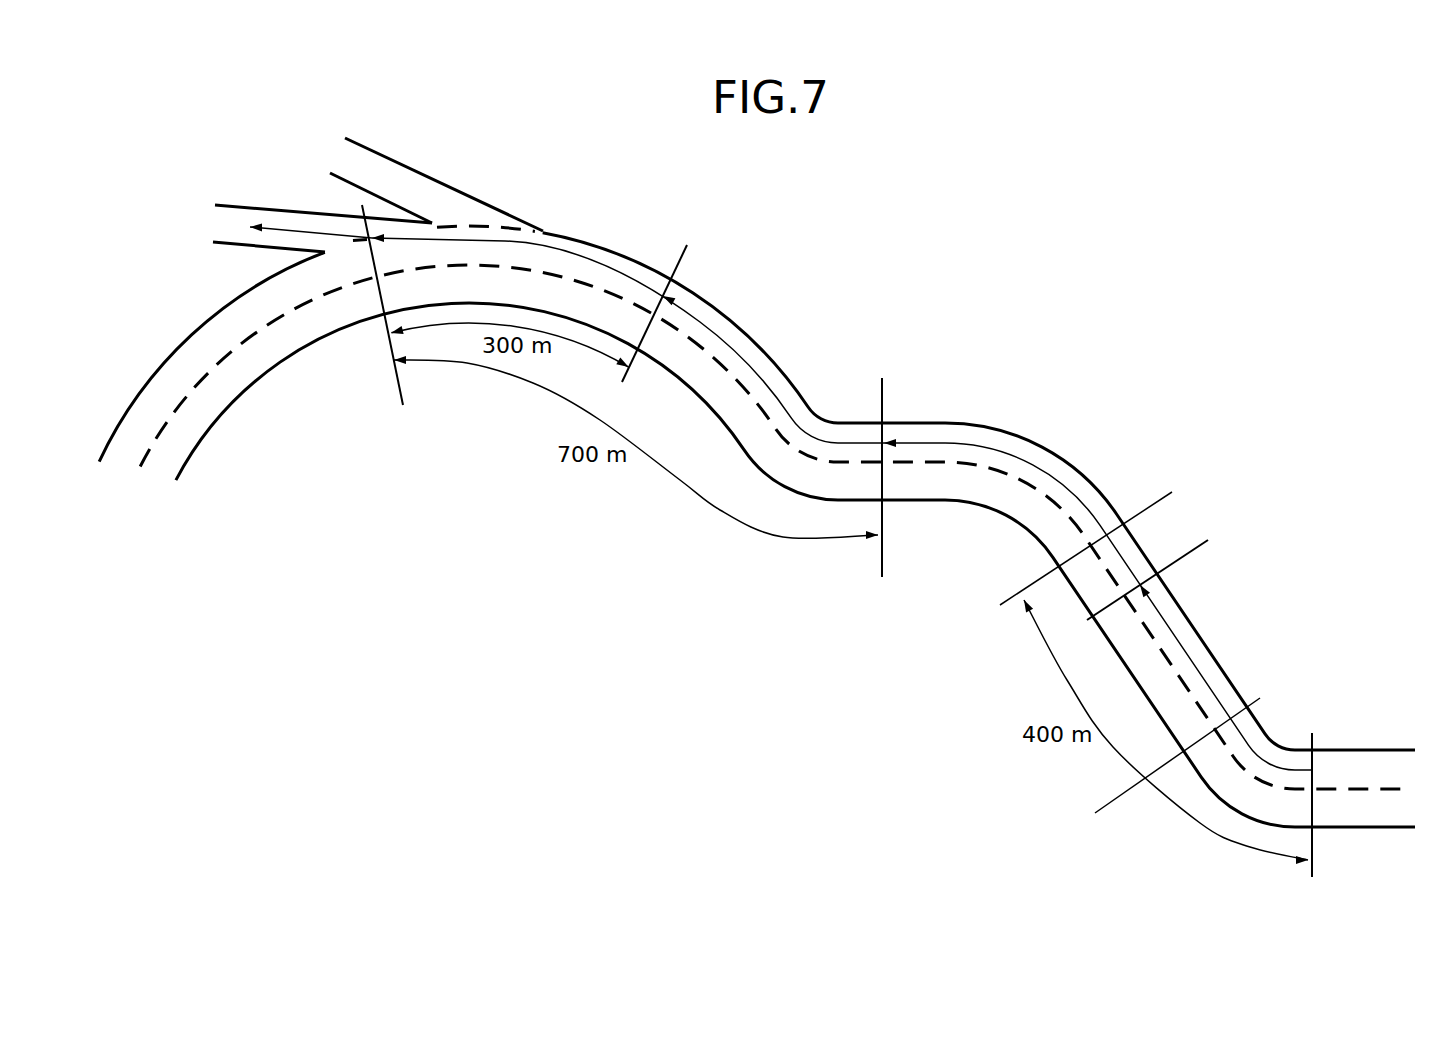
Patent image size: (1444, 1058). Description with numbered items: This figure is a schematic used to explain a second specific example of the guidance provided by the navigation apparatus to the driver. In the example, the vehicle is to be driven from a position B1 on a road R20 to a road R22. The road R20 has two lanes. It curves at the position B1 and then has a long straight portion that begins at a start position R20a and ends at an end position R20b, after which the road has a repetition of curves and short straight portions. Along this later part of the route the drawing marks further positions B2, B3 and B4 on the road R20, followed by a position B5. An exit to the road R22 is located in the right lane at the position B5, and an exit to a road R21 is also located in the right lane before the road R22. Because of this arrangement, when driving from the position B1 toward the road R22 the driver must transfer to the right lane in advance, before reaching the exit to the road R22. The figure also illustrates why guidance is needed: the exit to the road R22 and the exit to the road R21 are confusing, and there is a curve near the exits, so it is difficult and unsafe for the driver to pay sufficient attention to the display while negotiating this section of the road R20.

The road R20 is at (1342, 763).
The road R21 is at (410, 180).
The road R22 is at (292, 228).
The start position R20a is at (1149, 772).
The end position R20b is at (1045, 557).
The position B1 is at (1334, 805).
The position B2 is at (1161, 580).
The position B3 is at (903, 477).
The position B4 is at (654, 308).
The position B5 is at (371, 305).